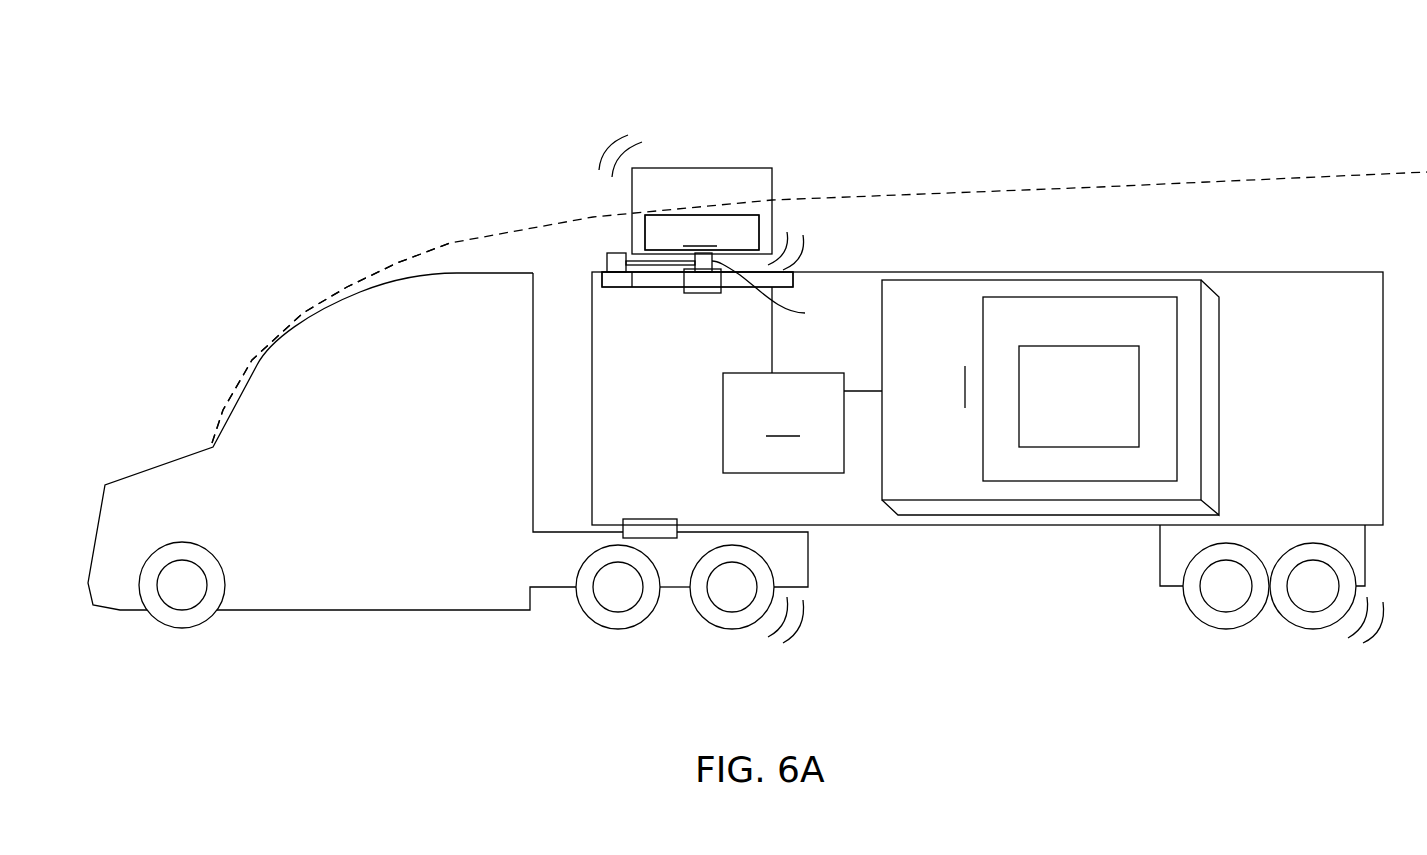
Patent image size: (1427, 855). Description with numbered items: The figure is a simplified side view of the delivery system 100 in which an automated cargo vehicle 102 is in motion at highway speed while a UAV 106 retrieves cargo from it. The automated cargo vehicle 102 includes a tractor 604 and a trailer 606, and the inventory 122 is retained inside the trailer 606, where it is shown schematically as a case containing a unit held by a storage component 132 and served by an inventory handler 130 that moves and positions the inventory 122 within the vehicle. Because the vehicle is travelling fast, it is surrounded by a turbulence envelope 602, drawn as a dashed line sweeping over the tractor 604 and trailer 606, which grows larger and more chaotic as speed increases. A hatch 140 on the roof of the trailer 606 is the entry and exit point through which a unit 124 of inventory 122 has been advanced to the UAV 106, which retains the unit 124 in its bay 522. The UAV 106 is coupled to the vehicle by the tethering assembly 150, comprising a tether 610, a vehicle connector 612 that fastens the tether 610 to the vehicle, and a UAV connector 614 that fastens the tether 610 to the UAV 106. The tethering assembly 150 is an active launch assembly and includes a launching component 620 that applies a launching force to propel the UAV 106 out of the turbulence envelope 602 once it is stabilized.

The delivery system 100 is at (305, 85).
The automated cargo vehicle 102 is at (178, 482).
The UAV 106 is at (725, 168).
The inventory 122 is at (1041, 390).
The unit 124 is at (702, 232).
The inventory handler 130 is at (802, 380).
The storage component 132 is at (1212, 465).
The hatch 140 is at (795, 289).
The tethering assembly 150 is at (668, 275).
The bay 522 is at (760, 227).
The turbulence envelope 602 is at (1207, 182).
The tractor 604 is at (453, 273).
The trailer 606 is at (1178, 272).
The tether 610 is at (660, 265).
The vehicle connector 612 is at (617, 253).
The UAV connector 614 is at (805, 313).
The launching component 620 is at (697, 293).